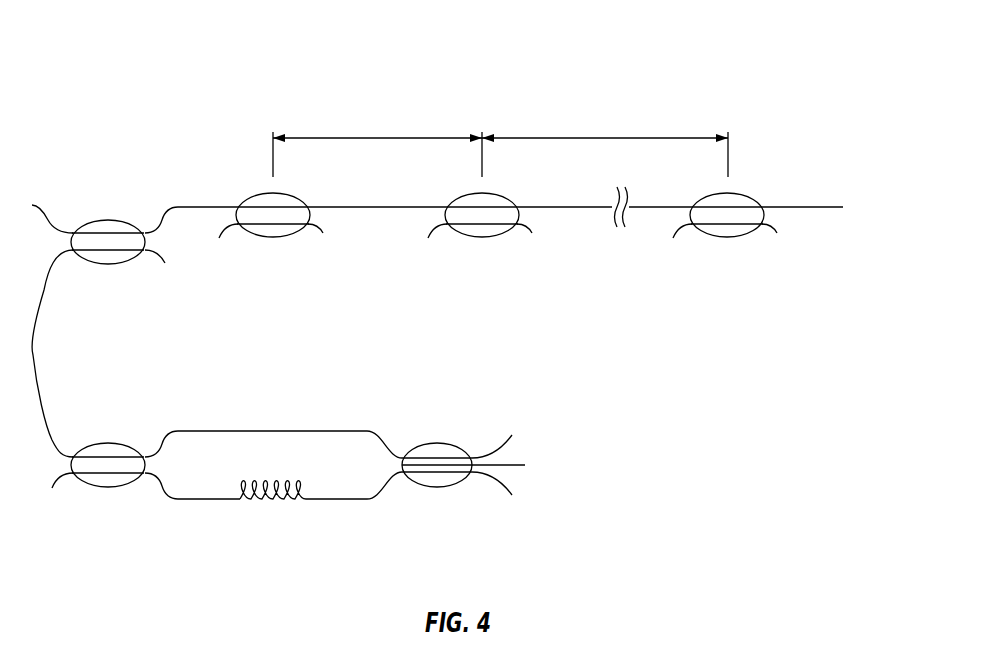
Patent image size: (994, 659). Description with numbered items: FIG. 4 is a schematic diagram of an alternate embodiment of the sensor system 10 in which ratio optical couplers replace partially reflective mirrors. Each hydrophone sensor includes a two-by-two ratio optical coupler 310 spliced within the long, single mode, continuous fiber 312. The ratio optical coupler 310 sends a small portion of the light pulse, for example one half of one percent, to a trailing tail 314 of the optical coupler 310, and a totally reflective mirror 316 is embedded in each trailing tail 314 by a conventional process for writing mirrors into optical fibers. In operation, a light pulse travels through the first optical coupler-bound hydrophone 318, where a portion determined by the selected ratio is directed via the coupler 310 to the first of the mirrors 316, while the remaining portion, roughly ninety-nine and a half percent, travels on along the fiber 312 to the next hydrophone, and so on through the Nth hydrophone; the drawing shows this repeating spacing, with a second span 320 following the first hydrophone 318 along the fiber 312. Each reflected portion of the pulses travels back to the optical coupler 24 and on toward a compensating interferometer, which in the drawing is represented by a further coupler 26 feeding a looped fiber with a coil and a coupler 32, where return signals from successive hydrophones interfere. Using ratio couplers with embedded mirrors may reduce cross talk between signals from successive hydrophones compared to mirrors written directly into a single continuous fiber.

The sensor system 10 is at (612, 70).
The optical coupler 24 is at (108, 220).
The coupler 26 is at (108, 443).
The coupler 32 is at (437, 487).
The ratio optical coupler 310 is at (288, 196).
The continuous fiber 312 is at (229, 207).
The trailing tail 314 is at (320, 230).
The totally reflective mirror 316 is at (334, 228).
The first optical coupler-bound hydrophone 318 is at (423, 138).
The spacing 320 is at (565, 138).